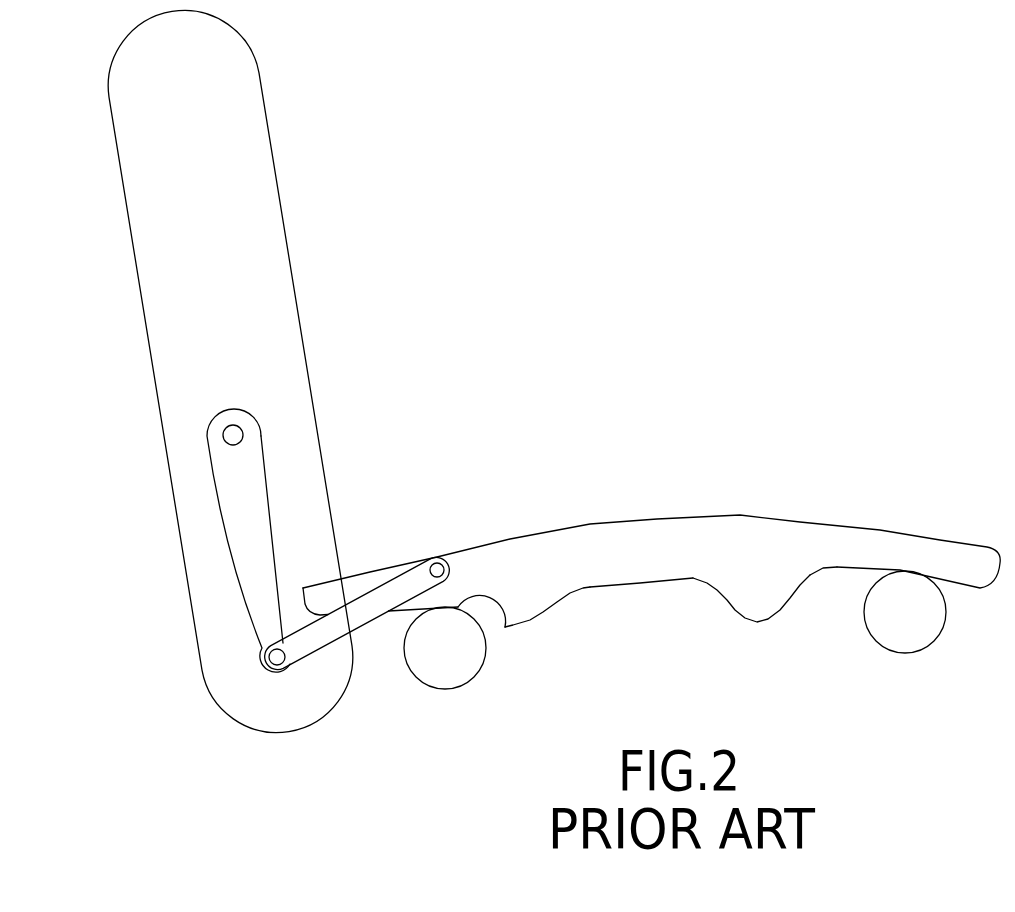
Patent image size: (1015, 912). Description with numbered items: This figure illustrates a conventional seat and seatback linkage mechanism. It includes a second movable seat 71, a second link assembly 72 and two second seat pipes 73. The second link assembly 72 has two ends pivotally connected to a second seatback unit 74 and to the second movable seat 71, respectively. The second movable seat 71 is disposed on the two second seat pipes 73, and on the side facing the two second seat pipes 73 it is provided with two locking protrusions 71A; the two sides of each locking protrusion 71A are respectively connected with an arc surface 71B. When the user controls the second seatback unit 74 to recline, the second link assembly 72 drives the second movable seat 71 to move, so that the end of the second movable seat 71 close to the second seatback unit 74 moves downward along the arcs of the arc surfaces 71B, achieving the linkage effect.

The second movable seat 71 is at (655, 527).
The locking protrusion 71A is at (518, 617).
The arc surface 71B is at (503, 627).
The second link assembly 72 is at (407, 583).
The second seat pipe 73 is at (445, 673).
The second seatback unit 74 is at (267, 202).